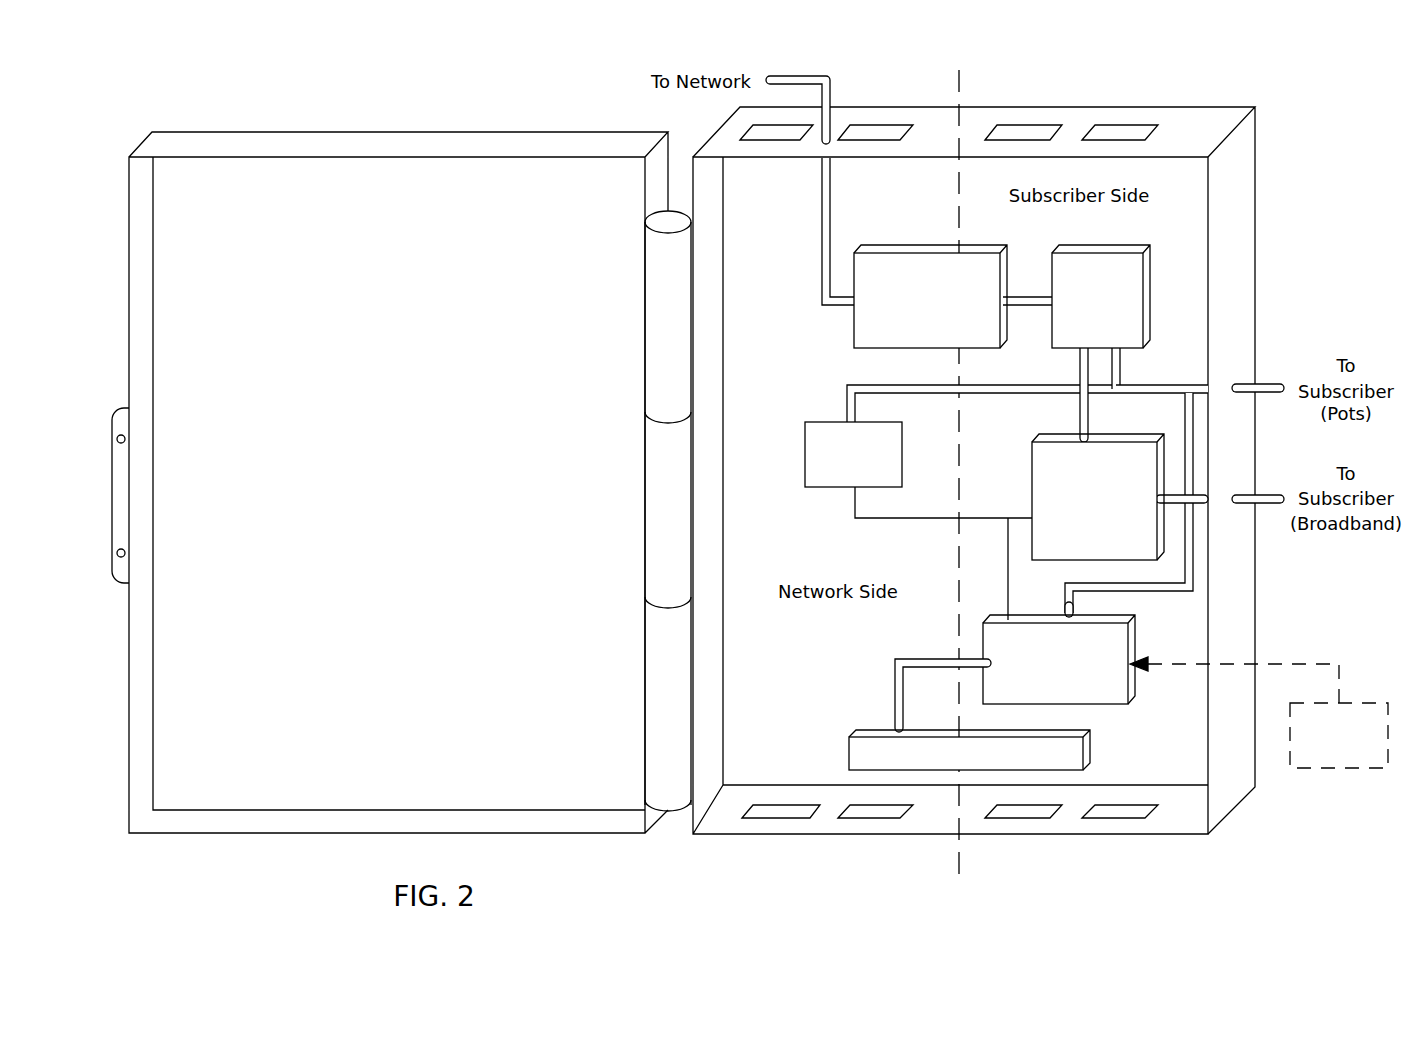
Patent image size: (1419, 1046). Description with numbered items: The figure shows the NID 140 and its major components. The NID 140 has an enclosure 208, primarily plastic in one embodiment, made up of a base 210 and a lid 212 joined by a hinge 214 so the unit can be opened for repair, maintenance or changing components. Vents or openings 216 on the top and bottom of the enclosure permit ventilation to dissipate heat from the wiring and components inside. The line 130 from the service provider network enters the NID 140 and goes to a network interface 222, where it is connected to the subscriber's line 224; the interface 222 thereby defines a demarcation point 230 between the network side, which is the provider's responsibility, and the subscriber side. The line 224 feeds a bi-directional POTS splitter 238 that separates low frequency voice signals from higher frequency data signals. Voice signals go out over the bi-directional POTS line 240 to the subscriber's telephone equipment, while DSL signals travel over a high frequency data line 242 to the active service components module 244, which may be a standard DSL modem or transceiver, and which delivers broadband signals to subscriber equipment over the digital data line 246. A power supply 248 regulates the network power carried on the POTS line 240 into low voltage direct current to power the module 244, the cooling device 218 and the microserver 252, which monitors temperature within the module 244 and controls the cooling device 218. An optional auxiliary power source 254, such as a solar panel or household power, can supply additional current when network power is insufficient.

The NID 140 is at (270, 106).
The lid 212 is at (468, 138).
The hinge 214 is at (651, 533).
The enclosure 208 is at (697, 858).
The base 210 is at (1212, 124).
The vents or openings 216 is at (1135, 136).
The demarcation point 230 is at (961, 97).
The line from the service provider network 130 is at (836, 97).
The network interface 222 is at (884, 243).
The subscriber's line 224 is at (1022, 290).
The POTS splitter 238 is at (1152, 275).
The POTS line 240 is at (1165, 383).
The high frequency data line 242 is at (1073, 375).
The active service components module 244 is at (1030, 470).
The high frequency digital data line 246 is at (1270, 492).
The power supply 248 is at (830, 490).
The microserver 252 is at (1112, 706).
The cooling device 218 is at (849, 750).
The auxiliary power source 254 is at (1312, 771).